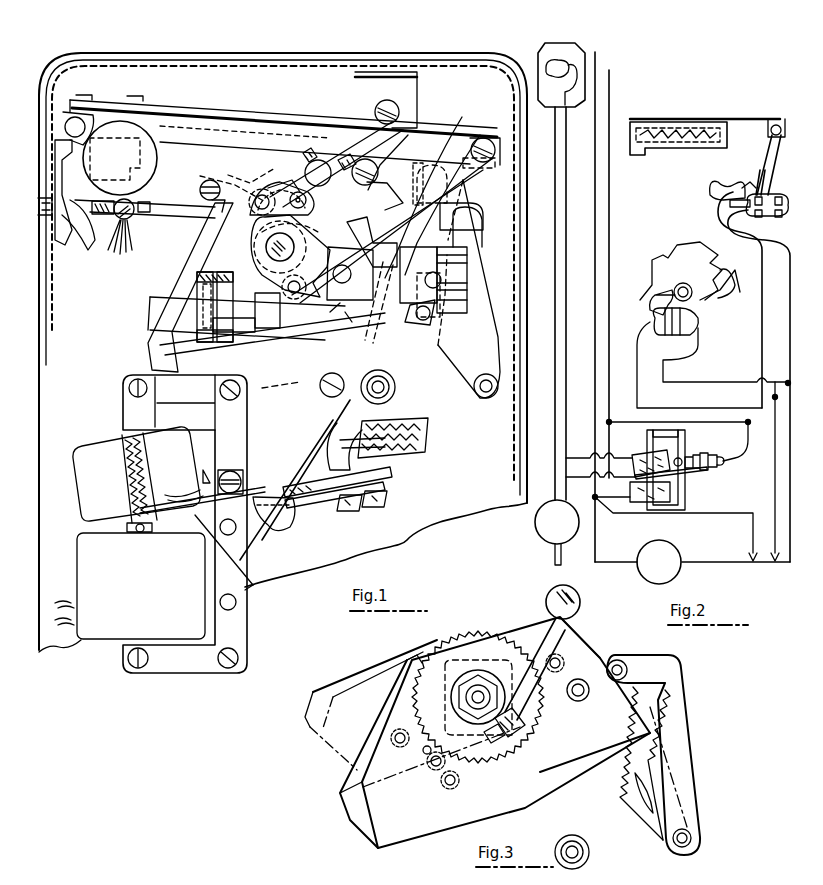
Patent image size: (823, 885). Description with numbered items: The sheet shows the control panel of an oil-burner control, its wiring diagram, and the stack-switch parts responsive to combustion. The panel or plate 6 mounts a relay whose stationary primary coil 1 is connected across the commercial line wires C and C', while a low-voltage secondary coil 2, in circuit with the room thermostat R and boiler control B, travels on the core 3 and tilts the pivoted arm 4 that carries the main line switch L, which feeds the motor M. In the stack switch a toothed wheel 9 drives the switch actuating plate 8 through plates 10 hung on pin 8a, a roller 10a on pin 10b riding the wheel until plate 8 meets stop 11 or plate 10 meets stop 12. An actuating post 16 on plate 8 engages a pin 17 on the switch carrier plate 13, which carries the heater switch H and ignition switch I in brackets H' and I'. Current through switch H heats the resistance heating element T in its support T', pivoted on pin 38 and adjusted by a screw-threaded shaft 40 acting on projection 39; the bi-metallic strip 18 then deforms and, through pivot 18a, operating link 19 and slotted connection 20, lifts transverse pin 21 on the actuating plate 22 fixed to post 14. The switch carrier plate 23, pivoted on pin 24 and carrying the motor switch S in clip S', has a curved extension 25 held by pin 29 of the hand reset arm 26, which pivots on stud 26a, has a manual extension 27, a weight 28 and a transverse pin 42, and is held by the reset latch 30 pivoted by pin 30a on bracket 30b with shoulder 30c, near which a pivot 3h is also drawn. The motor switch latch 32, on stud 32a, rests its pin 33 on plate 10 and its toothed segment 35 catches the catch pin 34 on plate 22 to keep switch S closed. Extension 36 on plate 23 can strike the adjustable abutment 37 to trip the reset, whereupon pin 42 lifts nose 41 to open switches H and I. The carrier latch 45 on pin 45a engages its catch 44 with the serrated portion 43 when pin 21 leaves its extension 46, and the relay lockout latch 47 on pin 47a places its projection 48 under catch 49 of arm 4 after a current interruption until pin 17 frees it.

In FIG. 1, the primary coil 1 is at (92, 570).
In FIG. 2, the primary coil 1 is at (672, 495).
In FIG. 1, the secondary coil 2 is at (95, 488).
In FIG. 2, the secondary coil 2 is at (640, 458).
In FIG. 1, the core 3 is at (232, 628).
In FIG. 2, the core 3 is at (682, 436).
In FIG. 1, the pivot 3h is at (280, 190).
In FIG. 1, the pivoted arm 4 is at (235, 575).
In FIG. 2, the pivoted arm 4 is at (705, 472).
In FIG. 1, the panel or plate 6 is at (489, 505).
In FIG. 1, the switch actuating plate 8 is at (268, 358).
In FIG. 3, the switch actuating plate 8 is at (392, 830).
In FIG. 3, the pin 8a is at (445, 780).
In FIG. 3, the toothed wheel 9 is at (352, 678).
In FIG. 1, the plates 10 is at (152, 361).
In FIG. 3, the plates 10 is at (360, 806).
In FIG. 3, the roller 10a is at (430, 762).
In FIG. 3, the pin 10b is at (422, 752).
In FIG. 3, the stop 11 is at (548, 592).
In FIG. 1, the stop 12 is at (395, 390).
In FIG. 3, the stop 12 is at (592, 855).
In FIG. 1, the switch carrier plate 13 is at (262, 270).
In FIG. 2, the switch carrier plate 13 is at (690, 255).
In FIG. 1, the post 14 is at (268, 242).
In FIG. 3, the actuating post 16 is at (510, 715).
In FIG. 1, the pin 17 is at (282, 290).
In FIG. 1, the strip of thermal bi-metallic metal 18 is at (241, 112).
In FIG. 2, the strip of thermal bi-metallic metal 18 is at (697, 118).
In FIG. 1, the pivot 18a is at (486, 139).
In FIG. 1, the operating link 19 is at (462, 180).
In FIG. 2, the operating link 19 is at (768, 160).
In FIG. 1, the slotted connection 20 is at (470, 210).
In FIG. 2, the slotted connection 20 is at (760, 174).
In FIG. 1, the elongated transverse pin 21 is at (366, 345).
In FIG. 1, the elongated actuating plate 22 is at (258, 258).
In FIG. 1, the switch carrier plate 23 is at (318, 318).
In FIG. 2, the switch carrier plate 23 is at (732, 199).
In FIG. 1, the pin 24 is at (343, 283).
In FIG. 1, the curved extension 25 is at (215, 213).
In FIG. 2, the curved extension 25 is at (712, 184).
In FIG. 1, the hand reset arm 26 is at (163, 140).
In FIG. 1, the stud 26a is at (201, 190).
In FIG. 1, the arcuate extension 27 is at (58, 168).
In FIG. 1, the weight 28 is at (115, 148).
In FIG. 1, the pin 29 is at (297, 192).
In FIG. 1, the reset latch 30 is at (318, 160).
In FIG. 1, the pin 30a is at (380, 104).
In FIG. 1, the bracket 30b is at (412, 88).
In FIG. 1, the shoulder 30c is at (310, 150).
In FIG. 1, the motor switch latch 32 is at (476, 364).
In FIG. 3, the motor switch latch 32 is at (680, 745).
In FIG. 1, the stud 32a is at (486, 400).
In FIG. 1, the transverse pin 33 is at (425, 180).
In FIG. 3, the transverse pin 33 is at (615, 658).
In FIG. 1, the motor switch latch catch pin 34 is at (446, 338).
In FIG. 3, the toothed segment 35 is at (655, 808).
In FIG. 1, the angular extension 36 is at (372, 222).
In FIG. 1, the adjustable abutment 37 is at (312, 205).
In FIG. 1, the pin 38 is at (68, 124).
In FIG. 1, the downward projection 39 is at (98, 222).
In FIG. 1, the screw-threaded shaft 40 is at (42, 214).
In FIG. 1, the nose 41 is at (220, 175).
In FIG. 2, the nose 41 is at (665, 255).
In FIG. 1, the transverse pin 42 is at (256, 186).
In FIG. 1, the arcuate serrated portion 43 is at (350, 160).
In FIG. 2, the arcuate serrated portion 43 is at (733, 280).
In FIG. 1, the catch 44 is at (408, 135).
In FIG. 1, the carrier latch 45 is at (463, 128).
In FIG. 1, the pin 45a is at (372, 164).
In FIG. 1, the depending extension 46 is at (397, 318).
In FIG. 1, the relay lockout latch 47 is at (300, 422).
In FIG. 1, the pin 47a is at (322, 387).
In FIG. 1, the projection 48 is at (276, 522).
In FIG. 1, the catch 49 is at (312, 505).
In FIG. 2, the boiler control B is at (548, 530).
In FIG. 2, the wire of the commercial line C is at (620, 255).
In FIG. 2, the other wire of the commercial line C' is at (600, 297).
In FIG. 2, the heater switch H is at (668, 286).
In FIG. 1, the bracket H' is at (177, 307).
In FIG. 2, the ignition switch I is at (714, 430).
In FIG. 1, the bracket I' is at (170, 307).
In FIG. 1, the main line switch L is at (372, 460).
In FIG. 2, the main line switch L is at (722, 460).
In FIG. 2, the motor M is at (680, 556).
In FIG. 2, the room thermostat R is at (545, 50).
In FIG. 2, the motor switch S is at (767, 190).
In FIG. 1, the clip S' is at (473, 260).
In FIG. 2, the resistance heating element T is at (678, 123).
In FIG. 1, the support T' is at (245, 104).